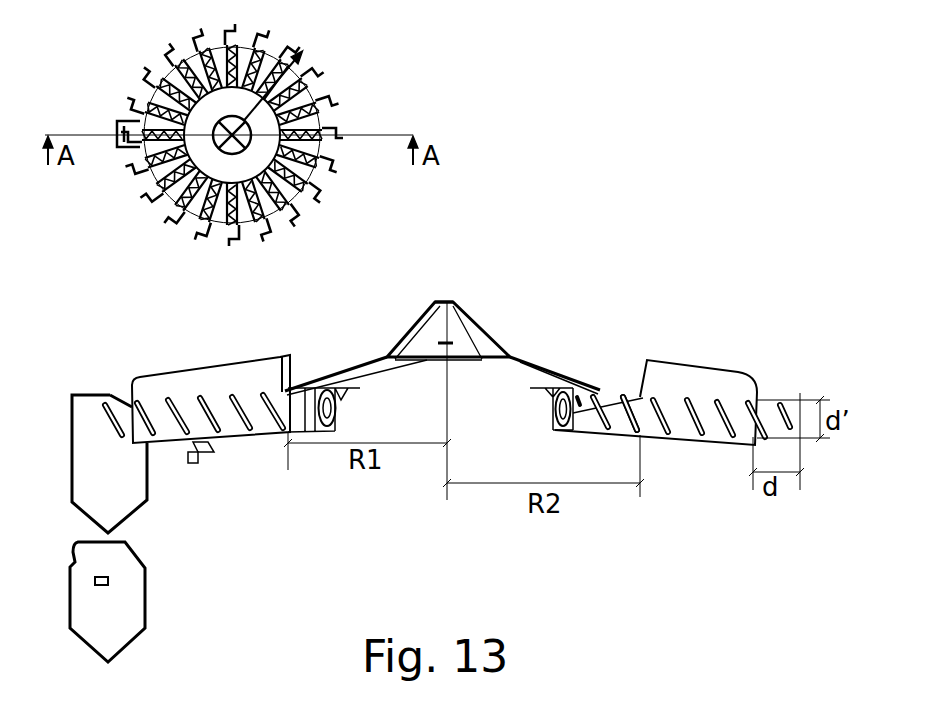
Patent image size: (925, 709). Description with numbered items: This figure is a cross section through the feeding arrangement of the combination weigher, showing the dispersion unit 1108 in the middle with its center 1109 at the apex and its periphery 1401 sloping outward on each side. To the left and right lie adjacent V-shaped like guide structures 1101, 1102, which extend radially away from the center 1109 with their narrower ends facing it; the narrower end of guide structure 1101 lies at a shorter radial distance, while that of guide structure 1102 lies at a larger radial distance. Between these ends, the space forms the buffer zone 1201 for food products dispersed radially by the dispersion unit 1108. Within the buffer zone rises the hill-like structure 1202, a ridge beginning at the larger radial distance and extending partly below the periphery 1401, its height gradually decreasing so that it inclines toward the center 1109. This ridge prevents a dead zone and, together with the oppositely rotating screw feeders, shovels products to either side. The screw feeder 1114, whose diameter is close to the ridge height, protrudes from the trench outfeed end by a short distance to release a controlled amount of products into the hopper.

The V-shaped like guide structure 1101 is at (272, 393).
The V-shaped like guide structure 1102 is at (722, 397).
The dispersion unit 1108 is at (510, 396).
The center of the dispersion unit 1109 is at (447, 300).
The screw feeder 1114 is at (721, 428).
The buffer zone 1201 is at (632, 348).
The hill-like structure 1202 is at (622, 400).
The periphery of the dispersion unit 1401 is at (596, 390).